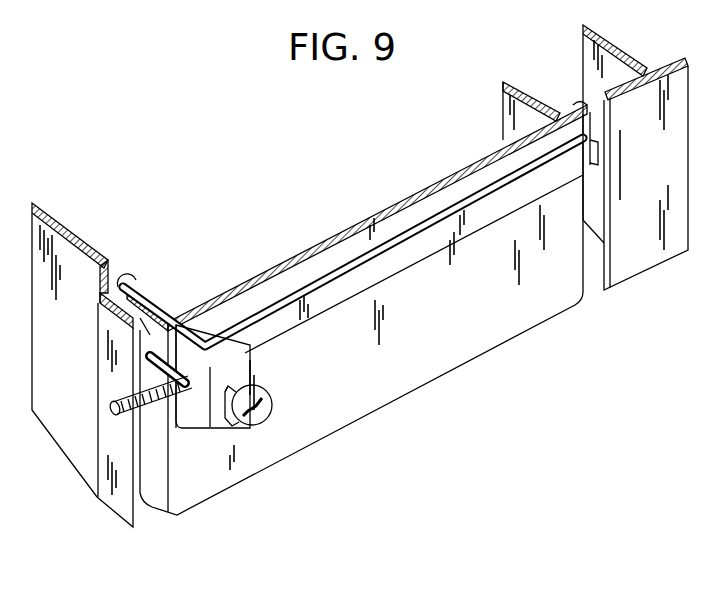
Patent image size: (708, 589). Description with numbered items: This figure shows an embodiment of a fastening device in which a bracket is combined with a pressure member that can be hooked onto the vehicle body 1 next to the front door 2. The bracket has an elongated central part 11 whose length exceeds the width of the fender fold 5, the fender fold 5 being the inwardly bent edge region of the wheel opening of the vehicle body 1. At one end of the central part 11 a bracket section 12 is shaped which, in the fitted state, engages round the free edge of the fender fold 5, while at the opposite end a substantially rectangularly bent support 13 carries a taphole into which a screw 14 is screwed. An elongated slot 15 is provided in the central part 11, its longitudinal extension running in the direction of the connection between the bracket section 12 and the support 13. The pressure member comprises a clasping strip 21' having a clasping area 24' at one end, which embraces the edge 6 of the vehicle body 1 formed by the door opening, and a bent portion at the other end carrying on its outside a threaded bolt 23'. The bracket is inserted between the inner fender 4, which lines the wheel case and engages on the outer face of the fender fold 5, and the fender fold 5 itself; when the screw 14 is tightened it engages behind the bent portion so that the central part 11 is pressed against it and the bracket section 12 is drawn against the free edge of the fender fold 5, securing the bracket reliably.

The vehicle body 1 is at (448, 360).
The front door 2 is at (648, 253).
The inner fender 4 is at (50, 235).
The fender fold 5 is at (150, 335).
The edge of vehicle body 6 is at (578, 100).
The central part 11 is at (160, 335).
The bracket section 12 is at (125, 287).
The support 13 is at (222, 432).
The screw 14 is at (270, 412).
The elongated slot 15 is at (148, 368).
The clasping strip 21' is at (414, 264).
The threaded bolt 23' is at (127, 396).
The clasping area 24' is at (618, 152).